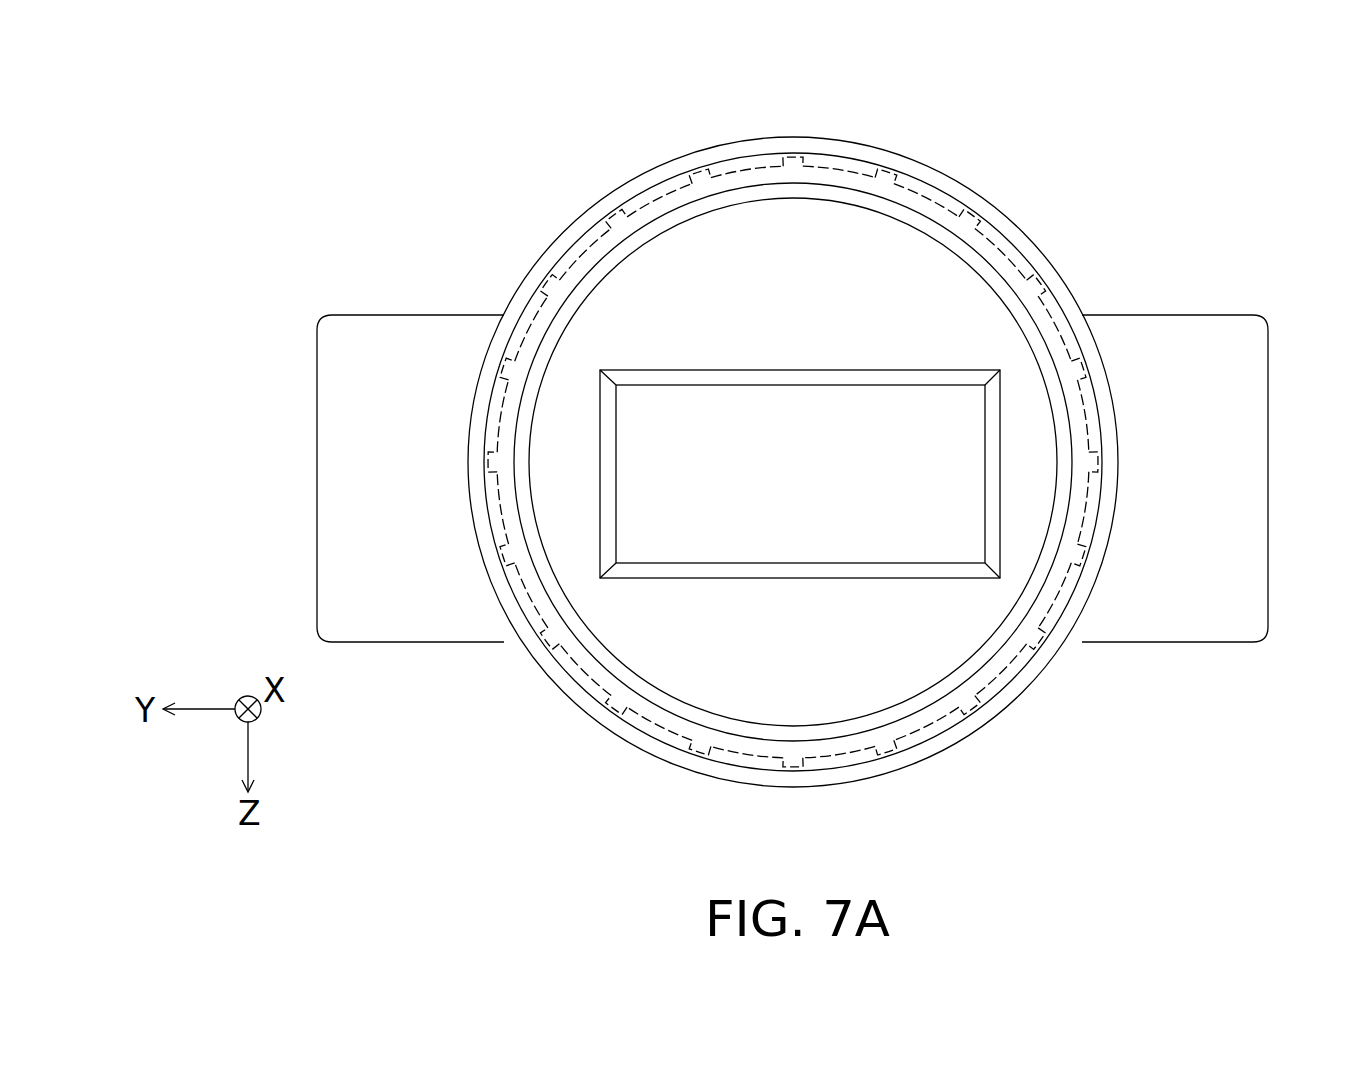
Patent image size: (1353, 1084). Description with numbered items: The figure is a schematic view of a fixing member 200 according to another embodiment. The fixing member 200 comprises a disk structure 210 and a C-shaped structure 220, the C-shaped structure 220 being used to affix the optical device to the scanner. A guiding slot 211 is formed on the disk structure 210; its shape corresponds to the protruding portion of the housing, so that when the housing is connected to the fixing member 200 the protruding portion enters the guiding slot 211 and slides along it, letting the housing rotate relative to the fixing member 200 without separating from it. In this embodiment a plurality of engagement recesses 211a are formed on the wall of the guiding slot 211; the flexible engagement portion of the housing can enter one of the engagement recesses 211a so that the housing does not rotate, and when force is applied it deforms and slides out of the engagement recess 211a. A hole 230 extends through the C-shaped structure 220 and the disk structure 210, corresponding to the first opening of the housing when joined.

The fixing member 200 is at (318, 93).
The disk structure 210 is at (1020, 228).
The guiding slot 211 is at (653, 200).
The engagement recesses 211a is at (790, 157).
The C-shaped structure 220 is at (362, 478).
The hole 230 is at (808, 522).